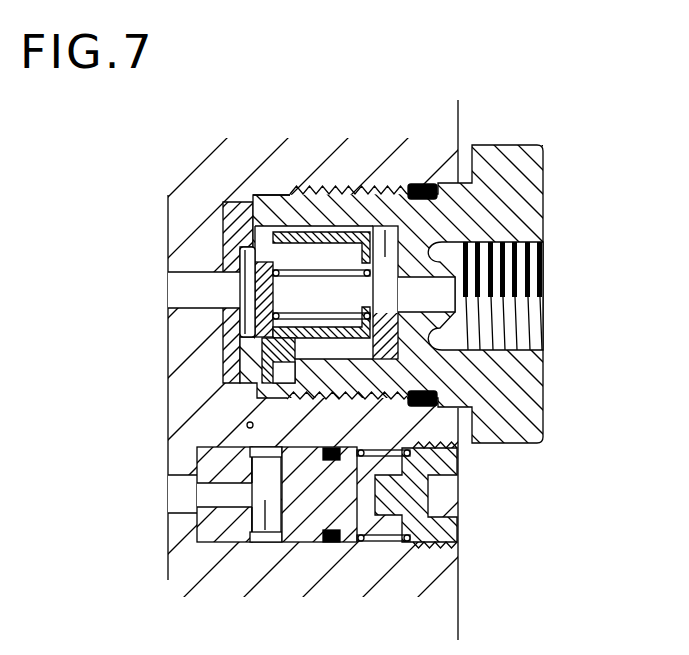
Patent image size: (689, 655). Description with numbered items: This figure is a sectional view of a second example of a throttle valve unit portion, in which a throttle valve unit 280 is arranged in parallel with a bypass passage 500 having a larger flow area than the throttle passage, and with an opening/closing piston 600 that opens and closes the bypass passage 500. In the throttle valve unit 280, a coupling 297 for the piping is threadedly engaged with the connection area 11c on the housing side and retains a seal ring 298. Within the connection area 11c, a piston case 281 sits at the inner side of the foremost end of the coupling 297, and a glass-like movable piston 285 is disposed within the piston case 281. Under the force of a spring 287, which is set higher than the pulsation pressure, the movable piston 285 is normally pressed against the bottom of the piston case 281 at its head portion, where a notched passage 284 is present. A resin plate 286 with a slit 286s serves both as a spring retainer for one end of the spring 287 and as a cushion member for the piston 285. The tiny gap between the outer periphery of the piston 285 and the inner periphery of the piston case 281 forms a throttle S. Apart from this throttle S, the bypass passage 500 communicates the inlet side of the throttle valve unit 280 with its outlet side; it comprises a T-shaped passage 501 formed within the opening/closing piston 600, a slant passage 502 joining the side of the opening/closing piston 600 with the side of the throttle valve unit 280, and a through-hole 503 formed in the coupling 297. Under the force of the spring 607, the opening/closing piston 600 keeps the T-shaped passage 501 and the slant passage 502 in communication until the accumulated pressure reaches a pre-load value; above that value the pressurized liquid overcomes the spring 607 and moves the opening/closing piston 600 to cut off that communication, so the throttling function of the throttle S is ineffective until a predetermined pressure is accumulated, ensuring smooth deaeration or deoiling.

The connection area 11c is at (415, 150).
The throttle valve unit 280 is at (328, 178).
The spring 287 is at (276, 195).
The slit 286s is at (386, 230).
The seal ring 298 is at (437, 183).
The coupling 297 is at (535, 202).
The resin plate 286 is at (380, 340).
The piston case 281 is at (235, 233).
The notched passage 284 is at (250, 290).
The movable piston 285 is at (268, 322).
The throttle S is at (258, 350).
The through-hole 503 is at (256, 378).
The slant passage 502 is at (247, 426).
The T-shaped passage 501 is at (264, 505).
The bypass passage 500 is at (175, 495).
The opening/closing piston 600 is at (307, 525).
The spring 607 is at (391, 542).